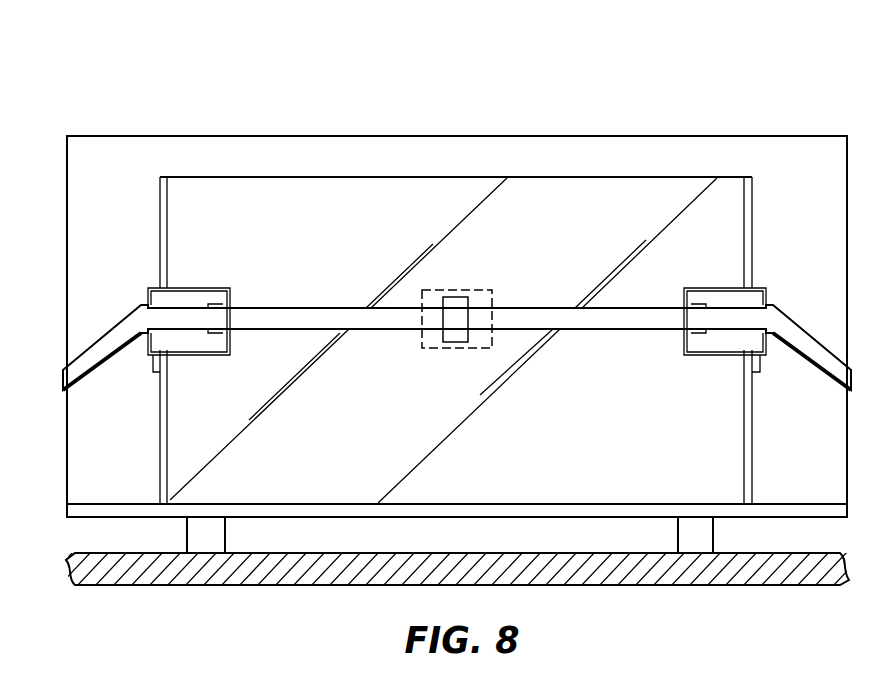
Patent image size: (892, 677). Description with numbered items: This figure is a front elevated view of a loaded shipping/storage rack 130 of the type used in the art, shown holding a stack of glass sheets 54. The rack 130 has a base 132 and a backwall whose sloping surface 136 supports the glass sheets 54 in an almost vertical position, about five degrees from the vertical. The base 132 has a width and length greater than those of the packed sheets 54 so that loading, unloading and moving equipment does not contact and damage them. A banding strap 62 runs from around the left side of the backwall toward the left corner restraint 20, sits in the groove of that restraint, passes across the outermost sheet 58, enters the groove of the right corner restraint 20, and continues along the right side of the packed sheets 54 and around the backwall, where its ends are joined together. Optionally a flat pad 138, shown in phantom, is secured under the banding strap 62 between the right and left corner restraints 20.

The shipping/storage rack 130 is at (754, 80).
The sloping surface 136 is at (795, 153).
The base 132 is at (790, 506).
The glass sheets 54 is at (445, 177).
The outermost sheet 58 is at (313, 190).
The banding strap 62 is at (62, 380).
The corner restraint 20 is at (244, 279).
The flat pad 138 is at (422, 340).